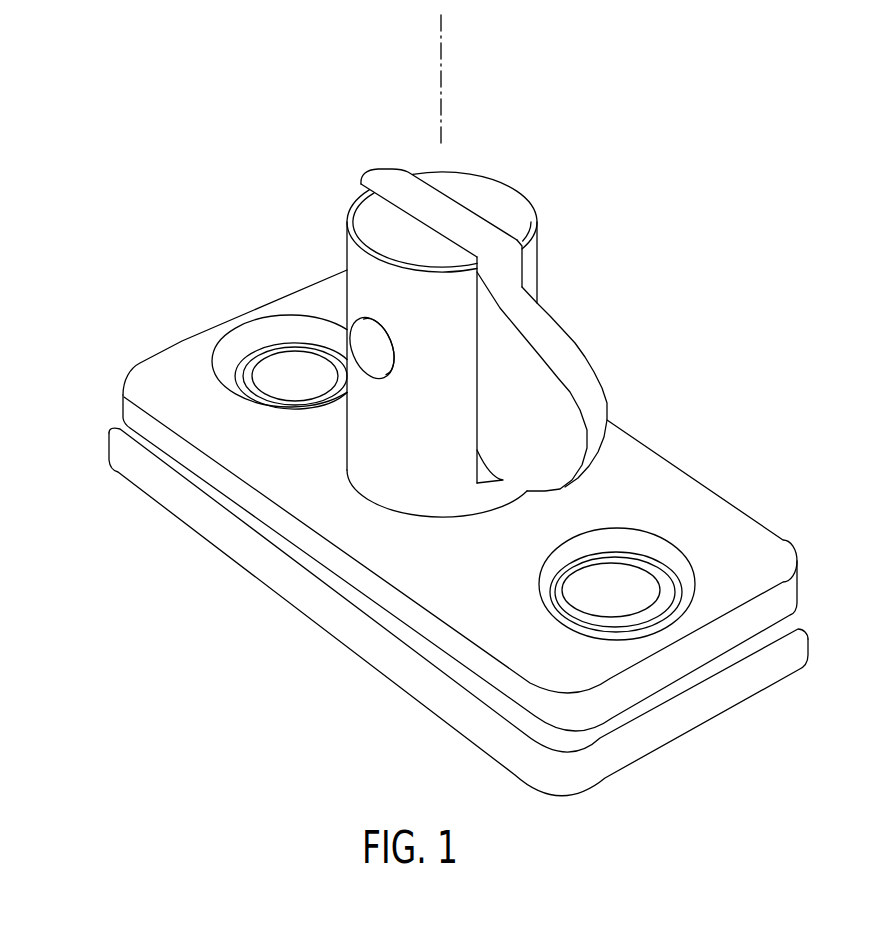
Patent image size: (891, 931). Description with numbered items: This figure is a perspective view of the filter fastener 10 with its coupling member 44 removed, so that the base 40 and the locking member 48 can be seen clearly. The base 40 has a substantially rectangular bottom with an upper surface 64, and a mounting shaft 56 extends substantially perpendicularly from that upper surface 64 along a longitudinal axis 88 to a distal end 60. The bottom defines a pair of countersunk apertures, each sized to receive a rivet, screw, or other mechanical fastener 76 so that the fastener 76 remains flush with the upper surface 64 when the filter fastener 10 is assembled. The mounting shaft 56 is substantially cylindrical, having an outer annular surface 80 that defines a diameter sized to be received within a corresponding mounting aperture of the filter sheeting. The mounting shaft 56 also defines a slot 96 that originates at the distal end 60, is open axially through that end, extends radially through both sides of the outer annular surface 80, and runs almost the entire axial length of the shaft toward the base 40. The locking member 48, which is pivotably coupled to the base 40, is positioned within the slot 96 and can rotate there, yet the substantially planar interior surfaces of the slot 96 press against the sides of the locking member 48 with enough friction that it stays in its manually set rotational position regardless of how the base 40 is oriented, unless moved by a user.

The filter fastener 10 is at (642, 118).
The base 40 is at (467, 500).
The coupling member 44 is at (802, 635).
The locking member 48 is at (495, 330).
The mounting shaft 56 is at (410, 315).
The distal end 60 is at (488, 177).
The upper surface 64 is at (670, 482).
The fastener 76 is at (295, 378).
The outer annular surface 80 is at (538, 262).
The longitudinal axis 88 is at (445, 48).
The slot 96 is at (526, 244).